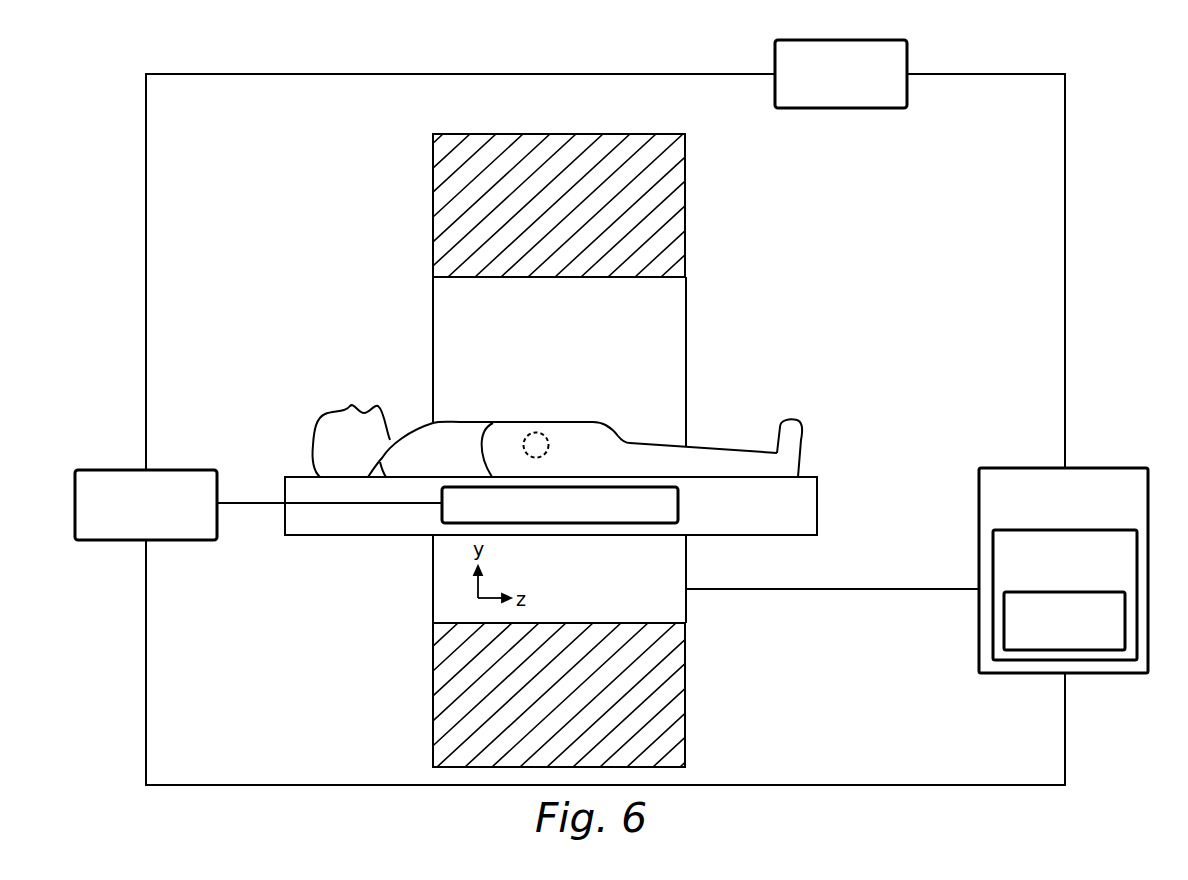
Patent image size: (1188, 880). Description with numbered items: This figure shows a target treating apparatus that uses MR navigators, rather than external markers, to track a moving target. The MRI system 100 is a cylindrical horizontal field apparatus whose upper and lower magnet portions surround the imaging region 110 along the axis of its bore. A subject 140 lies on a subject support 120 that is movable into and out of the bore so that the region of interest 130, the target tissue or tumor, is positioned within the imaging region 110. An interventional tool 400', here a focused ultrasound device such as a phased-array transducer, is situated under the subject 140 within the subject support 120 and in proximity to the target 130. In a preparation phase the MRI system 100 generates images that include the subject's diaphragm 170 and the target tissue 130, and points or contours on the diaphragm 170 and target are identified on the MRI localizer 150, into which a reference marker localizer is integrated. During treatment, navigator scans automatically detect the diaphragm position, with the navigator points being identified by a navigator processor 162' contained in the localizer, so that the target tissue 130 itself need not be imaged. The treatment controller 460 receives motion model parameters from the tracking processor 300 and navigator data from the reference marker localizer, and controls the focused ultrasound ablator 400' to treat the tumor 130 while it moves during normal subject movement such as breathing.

The magnetic resonance imaging (MRI) system 100 is at (686, 206).
The imaging region 110 is at (640, 340).
The subject support 120 is at (817, 492).
The region of interest 130 is at (549, 445).
The subject 140 is at (704, 453).
The MRI localizer 150 is at (1020, 468).
The navigator processor 162' is at (1071, 655).
The diaphragm 170 is at (488, 433).
The tracking processor 300 is at (840, 108).
The interventional tool (focused ultrasound ablator) 400' is at (560, 537).
The treatment controller 460 is at (110, 470).